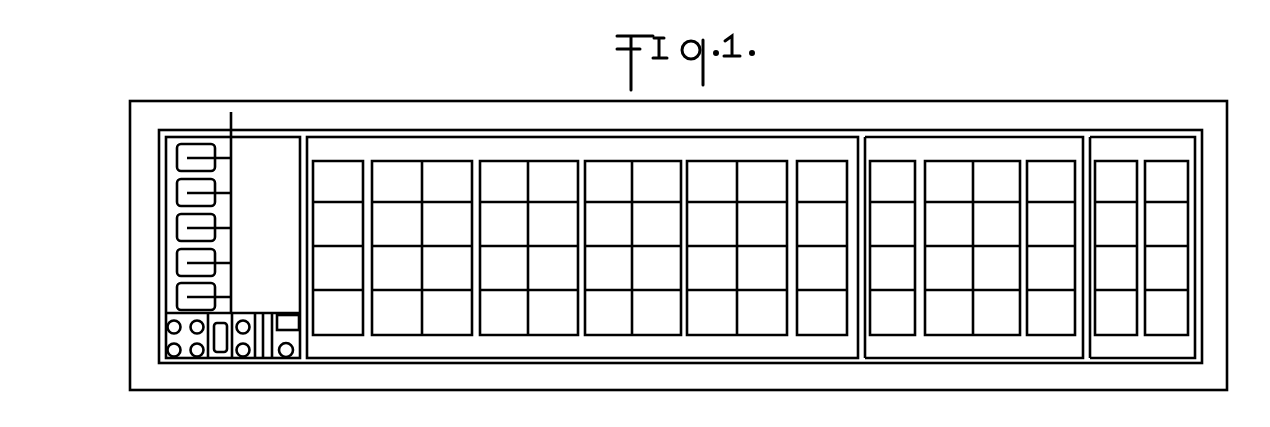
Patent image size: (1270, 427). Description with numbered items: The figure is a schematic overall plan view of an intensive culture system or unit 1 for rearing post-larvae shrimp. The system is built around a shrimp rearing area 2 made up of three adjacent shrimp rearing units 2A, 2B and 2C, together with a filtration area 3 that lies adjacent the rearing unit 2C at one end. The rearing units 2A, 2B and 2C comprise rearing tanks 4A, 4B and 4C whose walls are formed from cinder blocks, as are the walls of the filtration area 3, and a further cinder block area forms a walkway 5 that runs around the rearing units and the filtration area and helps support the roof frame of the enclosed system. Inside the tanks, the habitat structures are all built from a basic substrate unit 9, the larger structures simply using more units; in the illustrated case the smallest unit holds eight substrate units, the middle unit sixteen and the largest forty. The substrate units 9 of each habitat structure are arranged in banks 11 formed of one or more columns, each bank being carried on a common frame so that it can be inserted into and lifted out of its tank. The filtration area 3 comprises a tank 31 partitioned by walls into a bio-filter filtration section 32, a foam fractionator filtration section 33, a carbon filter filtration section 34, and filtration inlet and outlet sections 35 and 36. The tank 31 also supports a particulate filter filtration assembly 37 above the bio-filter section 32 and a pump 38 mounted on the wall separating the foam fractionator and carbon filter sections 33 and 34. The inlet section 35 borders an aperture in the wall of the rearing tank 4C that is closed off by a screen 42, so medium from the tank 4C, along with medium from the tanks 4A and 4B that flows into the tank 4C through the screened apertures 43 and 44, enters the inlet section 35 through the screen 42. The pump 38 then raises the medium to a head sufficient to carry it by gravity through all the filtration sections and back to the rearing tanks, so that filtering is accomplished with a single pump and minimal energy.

The intensive culture system 1 is at (192, 97).
The shrimp rearing area 2 is at (605, 120).
The shrimp rearing unit 2A is at (1153, 133).
The shrimp rearing unit 2B is at (962, 130).
The shrimp rearing unit 2C is at (690, 130).
The filtration area 3 is at (152, 138).
The rearing tank 4A is at (1180, 145).
The rearing tank 4B is at (1018, 145).
The rearing tank 4C is at (728, 145).
The walkway 5 is at (130, 265).
The substrate unit 9 is at (352, 330).
The bank 11 is at (620, 150).
The tank 31 is at (160, 184).
The bio-filter filtration section 32 is at (283, 148).
The foam fractionator filtration section 33 is at (165, 340).
The carbon filter filtration section 34 is at (245, 358).
The filtration inlet section 35 is at (280, 316).
The filtration outlet section 36 is at (279, 358).
The particulate filter filtration assembly 37 is at (177, 220).
The pump 38 is at (223, 321).
The screen 42 is at (298, 327).
The screened aperture 43 is at (863, 150).
The screened aperture 44 is at (1092, 148).